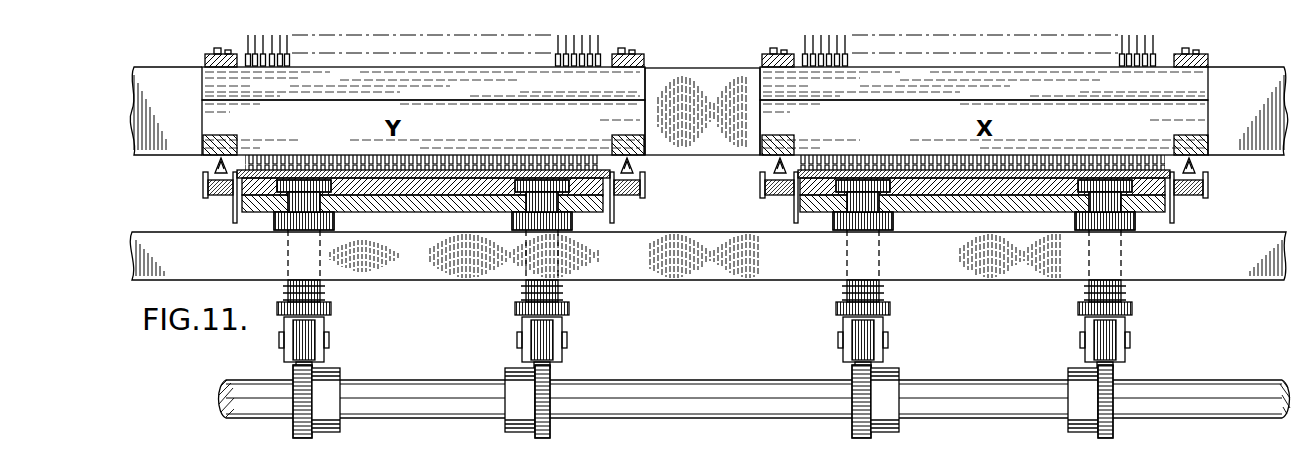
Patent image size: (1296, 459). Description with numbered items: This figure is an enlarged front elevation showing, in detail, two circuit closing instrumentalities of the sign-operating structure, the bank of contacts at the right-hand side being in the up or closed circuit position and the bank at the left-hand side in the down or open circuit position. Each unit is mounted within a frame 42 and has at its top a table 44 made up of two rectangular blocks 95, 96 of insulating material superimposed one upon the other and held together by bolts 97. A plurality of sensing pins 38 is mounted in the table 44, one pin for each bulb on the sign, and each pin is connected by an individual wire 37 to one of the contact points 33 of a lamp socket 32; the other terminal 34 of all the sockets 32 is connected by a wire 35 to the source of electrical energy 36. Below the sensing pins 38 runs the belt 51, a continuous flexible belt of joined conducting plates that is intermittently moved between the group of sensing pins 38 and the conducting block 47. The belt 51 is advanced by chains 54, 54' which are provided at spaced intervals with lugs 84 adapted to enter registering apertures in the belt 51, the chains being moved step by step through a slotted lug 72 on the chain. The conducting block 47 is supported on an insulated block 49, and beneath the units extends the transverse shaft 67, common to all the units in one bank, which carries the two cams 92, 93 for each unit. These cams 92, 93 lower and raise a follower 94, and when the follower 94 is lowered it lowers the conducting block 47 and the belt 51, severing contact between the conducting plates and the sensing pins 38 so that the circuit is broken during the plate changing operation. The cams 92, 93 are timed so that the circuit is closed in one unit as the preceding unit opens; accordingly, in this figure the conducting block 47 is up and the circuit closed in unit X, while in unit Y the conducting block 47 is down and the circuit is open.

The socket 32 is at (766, 444).
The contact points 33 is at (782, 458).
The terminal 34 is at (826, 453).
The wire 35 is at (470, 450).
The source of electrical energy 36 is at (376, 457).
The wire 37 is at (590, 52).
The sensing pin 38 is at (563, 160).
The frame 42 is at (1258, 78).
The table 44 is at (659, 77).
The conducting block 47 is at (444, 195).
The insulated block 49 is at (384, 195).
The belt 51 is at (643, 178).
The chain 54 is at (480, 196).
The chain 54' is at (934, 193).
The shaft 67 is at (1216, 386).
The lug 72 is at (232, 218).
The lug 84 is at (213, 165).
The cam 92 is at (293, 422).
The cam 93 is at (552, 376).
The follower 94 is at (333, 309).
The block 95 is at (215, 78).
The block 96 is at (218, 112).
The bolt 97 is at (218, 50).